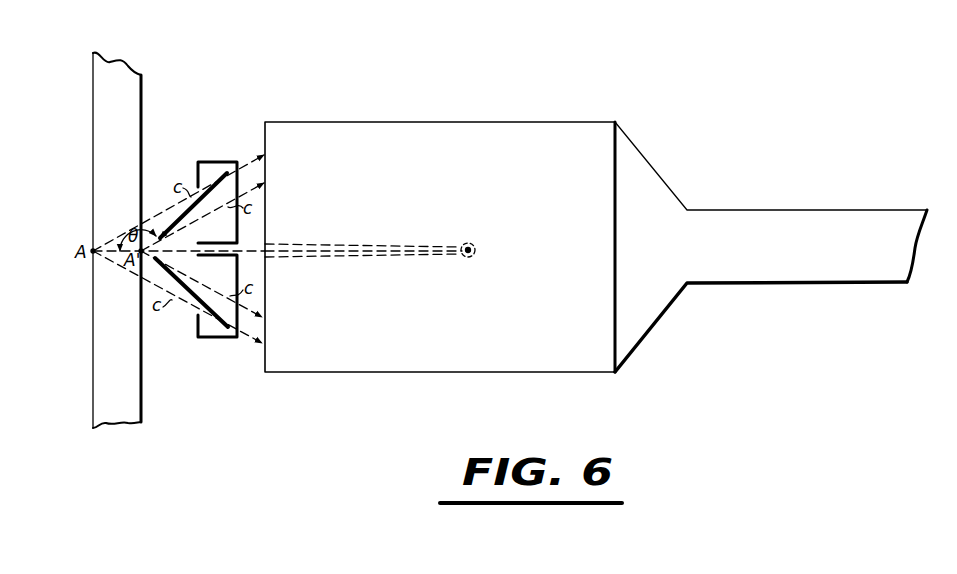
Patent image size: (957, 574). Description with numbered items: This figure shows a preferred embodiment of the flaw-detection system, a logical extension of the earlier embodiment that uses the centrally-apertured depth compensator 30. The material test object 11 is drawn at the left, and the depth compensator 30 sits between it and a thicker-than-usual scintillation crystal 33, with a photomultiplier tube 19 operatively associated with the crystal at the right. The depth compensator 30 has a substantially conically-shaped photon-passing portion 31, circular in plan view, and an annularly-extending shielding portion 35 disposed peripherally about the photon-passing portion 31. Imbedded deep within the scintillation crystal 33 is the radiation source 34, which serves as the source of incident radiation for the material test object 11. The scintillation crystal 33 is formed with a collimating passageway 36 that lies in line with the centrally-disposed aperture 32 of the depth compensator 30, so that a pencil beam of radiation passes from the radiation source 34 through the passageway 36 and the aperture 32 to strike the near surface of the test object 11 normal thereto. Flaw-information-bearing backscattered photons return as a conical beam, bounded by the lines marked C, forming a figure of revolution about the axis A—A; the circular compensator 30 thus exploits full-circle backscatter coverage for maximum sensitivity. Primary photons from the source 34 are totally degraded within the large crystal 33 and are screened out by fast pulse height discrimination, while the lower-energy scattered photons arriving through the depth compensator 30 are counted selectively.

The material test object 11 is at (101, 146).
The photomultiplier tube 19 is at (784, 210).
The centrally-apertured depth compensator 30 is at (194, 310).
The photon-passing portion 31 is at (243, 178).
The centrally-disposed aperture 32 is at (218, 250).
The scintillation crystal 33 is at (484, 122).
The radiation source 34 is at (473, 245).
The shielding portion 35 is at (205, 172).
The collimating passageway 36 is at (424, 258).